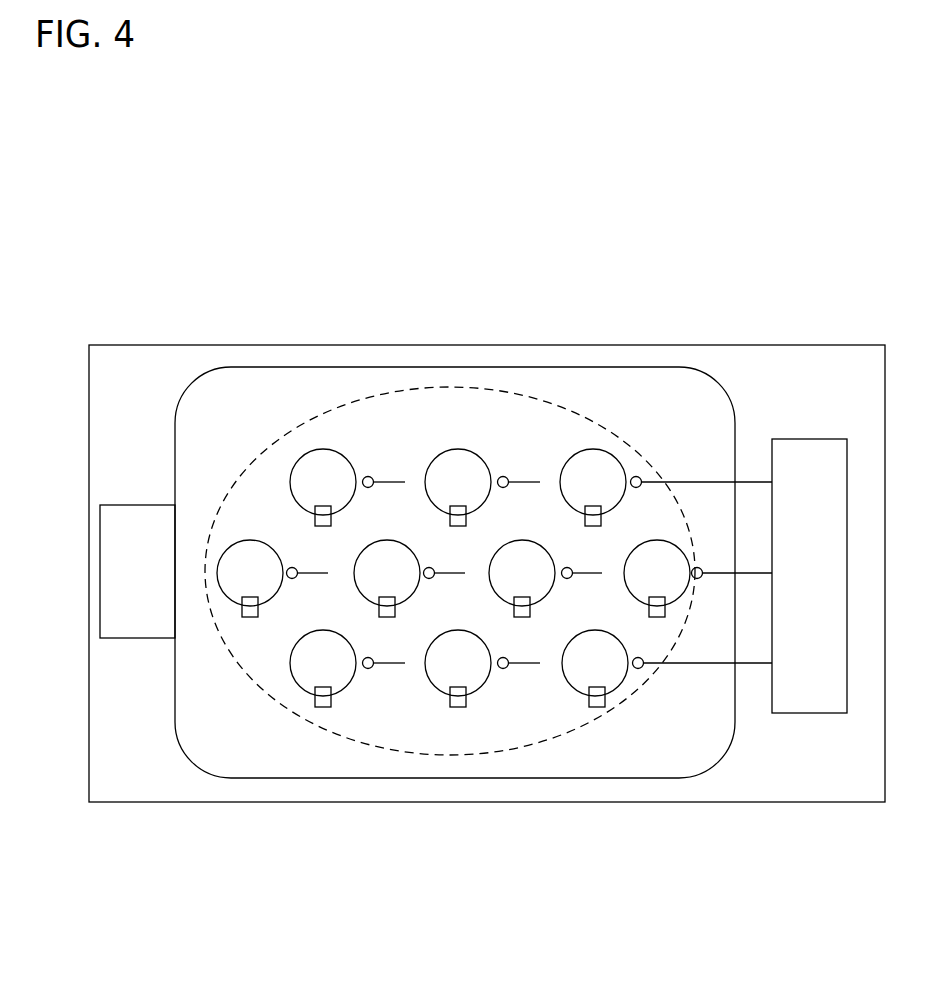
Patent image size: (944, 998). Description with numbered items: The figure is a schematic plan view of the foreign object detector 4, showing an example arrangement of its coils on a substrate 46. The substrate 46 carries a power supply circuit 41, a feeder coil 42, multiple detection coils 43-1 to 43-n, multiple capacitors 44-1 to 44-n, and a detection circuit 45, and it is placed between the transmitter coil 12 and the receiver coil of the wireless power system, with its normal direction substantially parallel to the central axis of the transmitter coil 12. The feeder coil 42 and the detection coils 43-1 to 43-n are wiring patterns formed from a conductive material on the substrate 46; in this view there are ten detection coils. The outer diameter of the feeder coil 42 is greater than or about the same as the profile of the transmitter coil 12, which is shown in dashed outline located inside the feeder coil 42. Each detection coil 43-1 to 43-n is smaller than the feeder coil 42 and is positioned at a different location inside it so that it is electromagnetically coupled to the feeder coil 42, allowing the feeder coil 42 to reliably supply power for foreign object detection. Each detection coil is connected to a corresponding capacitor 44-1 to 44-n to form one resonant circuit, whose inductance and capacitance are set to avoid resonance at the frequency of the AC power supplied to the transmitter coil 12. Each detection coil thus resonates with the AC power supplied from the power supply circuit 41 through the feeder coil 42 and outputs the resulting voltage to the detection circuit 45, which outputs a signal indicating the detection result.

The foreign object detector 4 is at (785, 900).
The transmitter coil 12 is at (502, 388).
The power supply circuit 41 is at (133, 640).
The feeder coil 42 is at (282, 778).
The detection coil 43-1 is at (302, 458).
The detection coil 43-n is at (583, 695).
The capacitor 44-1 is at (327, 505).
The capacitor 44-n is at (608, 695).
The detection circuit 45 is at (805, 713).
The substrate 46 is at (710, 802).